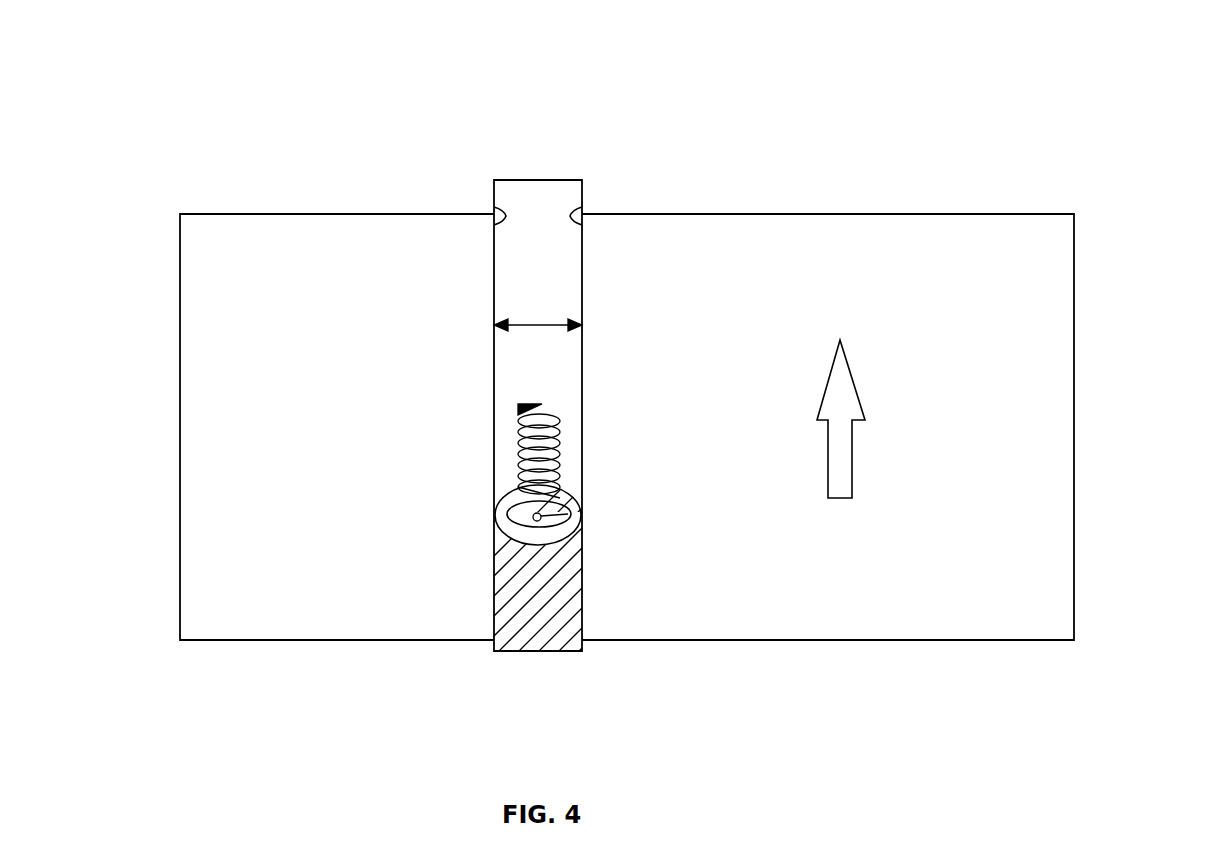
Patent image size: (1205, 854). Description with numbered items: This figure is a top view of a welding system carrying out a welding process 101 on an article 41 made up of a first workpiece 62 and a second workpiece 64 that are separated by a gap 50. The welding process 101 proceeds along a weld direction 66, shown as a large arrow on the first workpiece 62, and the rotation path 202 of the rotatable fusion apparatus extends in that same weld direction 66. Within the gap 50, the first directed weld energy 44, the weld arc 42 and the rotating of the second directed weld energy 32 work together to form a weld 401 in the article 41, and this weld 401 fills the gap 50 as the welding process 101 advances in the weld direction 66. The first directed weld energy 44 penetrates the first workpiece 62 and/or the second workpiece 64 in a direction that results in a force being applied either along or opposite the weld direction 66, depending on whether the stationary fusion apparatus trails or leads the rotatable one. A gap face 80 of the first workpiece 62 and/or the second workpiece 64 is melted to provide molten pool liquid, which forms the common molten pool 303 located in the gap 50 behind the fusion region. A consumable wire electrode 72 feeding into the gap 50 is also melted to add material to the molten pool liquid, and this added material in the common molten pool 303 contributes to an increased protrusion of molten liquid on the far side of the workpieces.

The welding process 101 is at (228, 118).
The consumable wire electrode 72 is at (568, 188).
The gap face 80 is at (494, 212).
The gap 50 is at (552, 322).
The article 41 is at (143, 440).
The weld direction 66 is at (852, 440).
The rotation path 202 is at (519, 468).
The weld arc 42 is at (578, 500).
The second directed weld energy 32 is at (512, 508).
The first directed weld energy 44 is at (572, 515).
The common molten pool 303 is at (500, 535).
The weld 401 is at (528, 640).
The second workpiece 64 is at (234, 628).
The first workpiece 62 is at (930, 628).